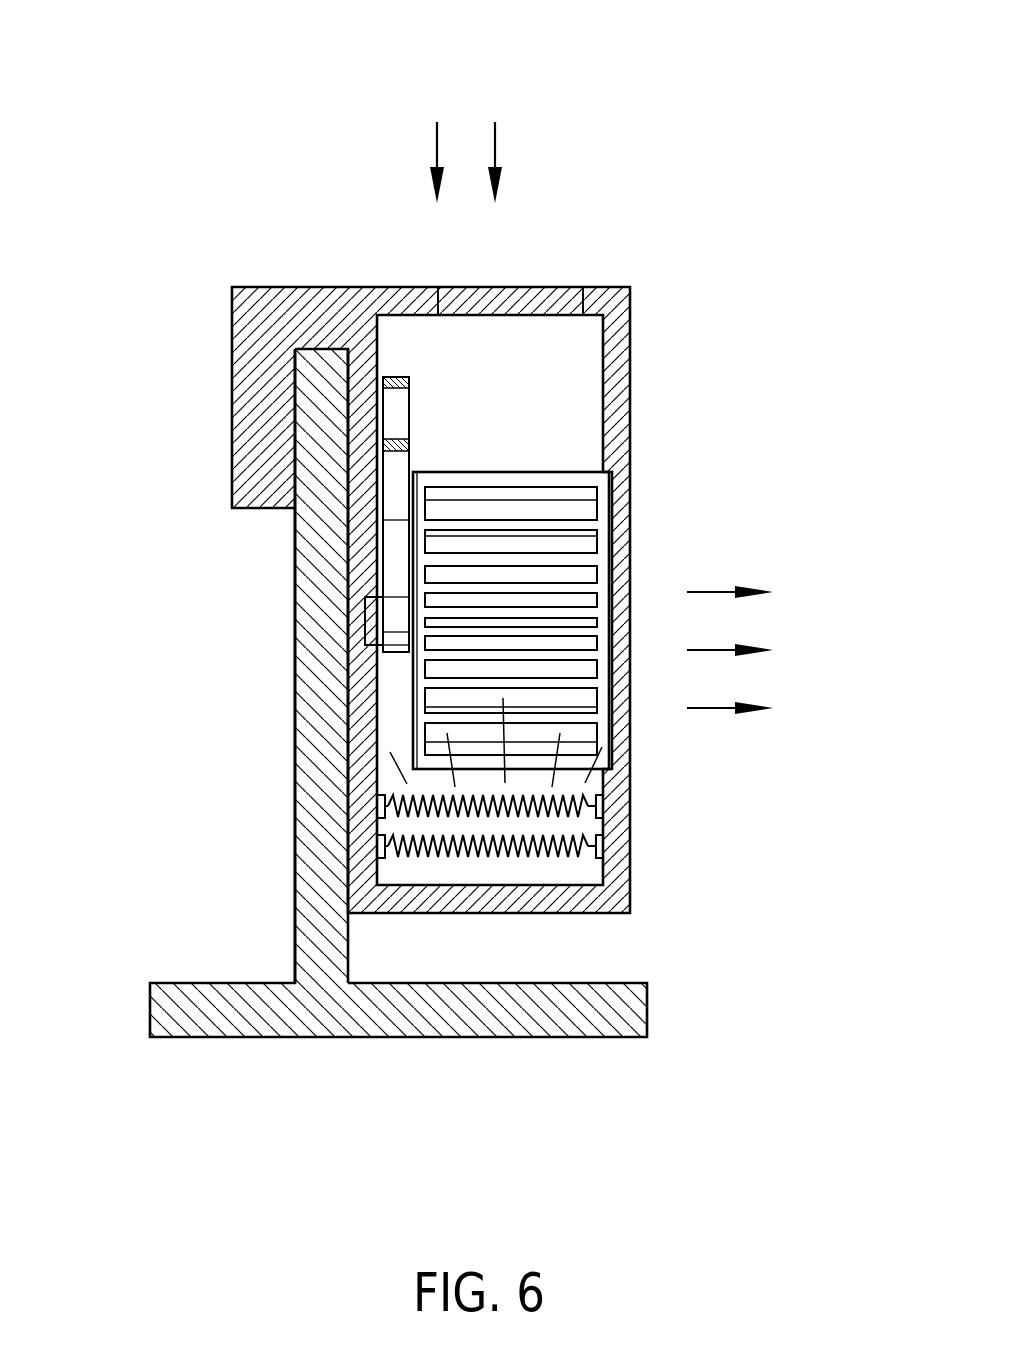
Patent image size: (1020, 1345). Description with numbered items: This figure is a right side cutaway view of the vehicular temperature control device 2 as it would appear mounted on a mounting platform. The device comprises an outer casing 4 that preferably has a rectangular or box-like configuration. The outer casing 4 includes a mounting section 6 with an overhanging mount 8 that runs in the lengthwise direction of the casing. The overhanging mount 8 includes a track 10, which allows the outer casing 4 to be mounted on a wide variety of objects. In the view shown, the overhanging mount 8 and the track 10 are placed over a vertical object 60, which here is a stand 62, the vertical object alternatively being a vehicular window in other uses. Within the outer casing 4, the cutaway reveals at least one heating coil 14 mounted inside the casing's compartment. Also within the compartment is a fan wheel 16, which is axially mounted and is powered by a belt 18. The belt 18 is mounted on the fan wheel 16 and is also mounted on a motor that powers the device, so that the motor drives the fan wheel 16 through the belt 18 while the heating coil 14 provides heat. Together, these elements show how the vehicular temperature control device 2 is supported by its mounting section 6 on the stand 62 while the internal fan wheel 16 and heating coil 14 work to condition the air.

The vehicular temperature control device 2 is at (355, 122).
The outer casing 4 is at (572, 286).
The mounting section 6 is at (387, 273).
The overhanging mount 8 is at (260, 317).
The track 10 is at (292, 403).
The heating coil 14 is at (545, 830).
The fan wheel 16 is at (510, 513).
The belt 18 is at (390, 471).
The vertical object 60 is at (317, 853).
The stand 62 is at (317, 765).